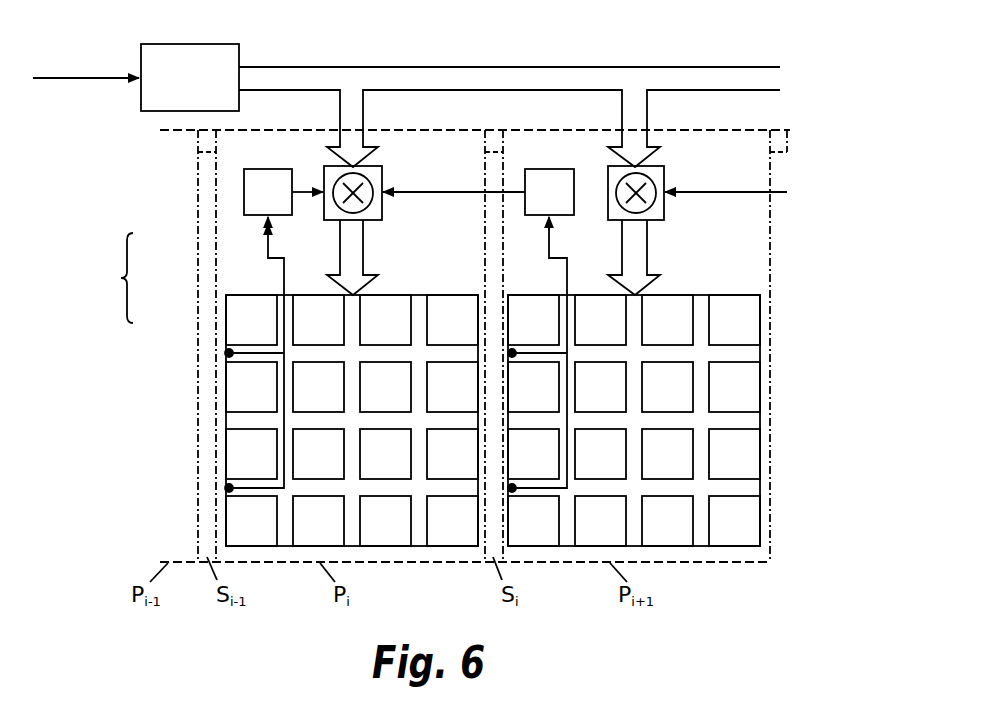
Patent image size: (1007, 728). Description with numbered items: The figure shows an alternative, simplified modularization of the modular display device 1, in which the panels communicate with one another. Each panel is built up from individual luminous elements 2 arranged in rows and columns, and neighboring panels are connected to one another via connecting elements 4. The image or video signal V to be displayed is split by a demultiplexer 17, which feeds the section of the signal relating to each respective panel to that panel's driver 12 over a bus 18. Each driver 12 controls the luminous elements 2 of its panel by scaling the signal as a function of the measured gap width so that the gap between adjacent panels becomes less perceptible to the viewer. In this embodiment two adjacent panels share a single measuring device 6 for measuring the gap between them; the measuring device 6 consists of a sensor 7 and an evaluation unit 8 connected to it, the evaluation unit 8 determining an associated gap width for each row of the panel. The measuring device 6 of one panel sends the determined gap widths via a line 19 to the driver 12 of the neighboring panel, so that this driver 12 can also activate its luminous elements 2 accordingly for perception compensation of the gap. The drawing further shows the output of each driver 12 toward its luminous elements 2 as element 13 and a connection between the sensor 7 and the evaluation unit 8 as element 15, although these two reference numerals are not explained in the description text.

The display device 1 is at (771, 52).
The luminous elements 2 is at (248, 390).
The connecting elements 4 is at (496, 137).
The measuring device 6 is at (116, 278).
The sensor 7 is at (227, 348).
The evaluation unit 8 is at (243, 198).
The driver 12 is at (334, 221).
The output signal line 13 is at (366, 266).
The feedback line 15 is at (288, 289).
The demultiplexer 17 is at (139, 97).
The bus 18 is at (457, 79).
The line 19 is at (443, 194).